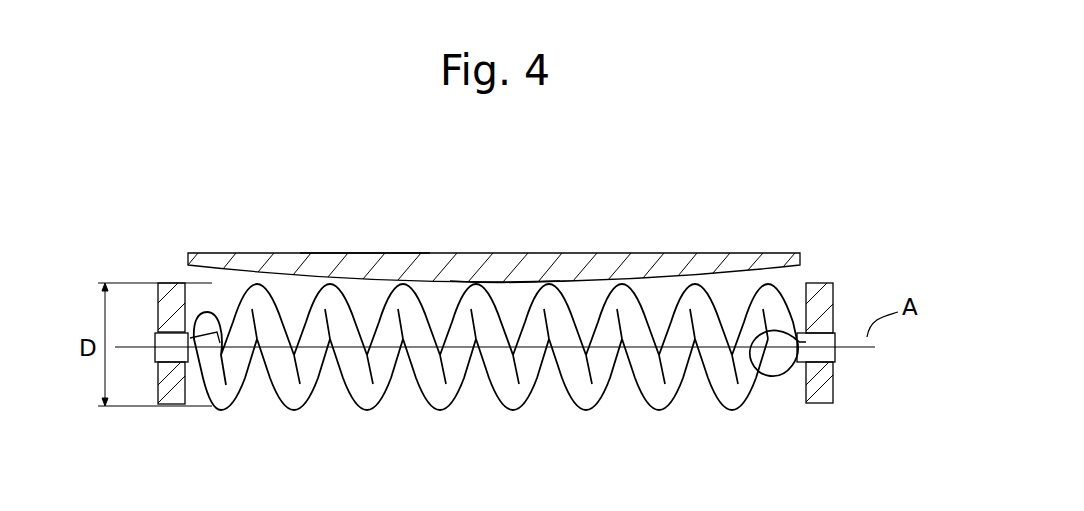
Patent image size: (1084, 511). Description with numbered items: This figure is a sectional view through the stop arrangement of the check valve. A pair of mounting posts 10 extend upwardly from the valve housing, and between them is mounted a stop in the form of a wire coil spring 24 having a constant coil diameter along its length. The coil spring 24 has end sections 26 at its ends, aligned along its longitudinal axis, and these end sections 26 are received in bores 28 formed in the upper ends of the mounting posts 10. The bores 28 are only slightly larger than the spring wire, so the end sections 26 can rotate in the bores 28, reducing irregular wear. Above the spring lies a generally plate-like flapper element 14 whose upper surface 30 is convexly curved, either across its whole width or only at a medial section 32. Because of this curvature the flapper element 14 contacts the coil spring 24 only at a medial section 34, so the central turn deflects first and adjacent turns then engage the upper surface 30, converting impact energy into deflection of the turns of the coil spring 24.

The mounting post 10 is at (170, 404).
The flapper element 14 is at (617, 253).
The coil spring 24 is at (516, 410).
The end section 26 is at (176, 362).
The bore 28 is at (153, 332).
The upper surface 30 is at (510, 285).
The medial section 32 is at (366, 264).
The medial section 34 is at (489, 378).